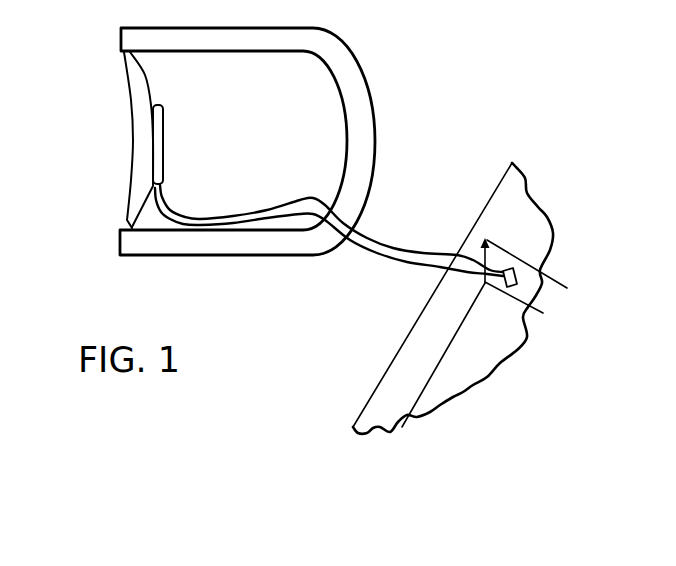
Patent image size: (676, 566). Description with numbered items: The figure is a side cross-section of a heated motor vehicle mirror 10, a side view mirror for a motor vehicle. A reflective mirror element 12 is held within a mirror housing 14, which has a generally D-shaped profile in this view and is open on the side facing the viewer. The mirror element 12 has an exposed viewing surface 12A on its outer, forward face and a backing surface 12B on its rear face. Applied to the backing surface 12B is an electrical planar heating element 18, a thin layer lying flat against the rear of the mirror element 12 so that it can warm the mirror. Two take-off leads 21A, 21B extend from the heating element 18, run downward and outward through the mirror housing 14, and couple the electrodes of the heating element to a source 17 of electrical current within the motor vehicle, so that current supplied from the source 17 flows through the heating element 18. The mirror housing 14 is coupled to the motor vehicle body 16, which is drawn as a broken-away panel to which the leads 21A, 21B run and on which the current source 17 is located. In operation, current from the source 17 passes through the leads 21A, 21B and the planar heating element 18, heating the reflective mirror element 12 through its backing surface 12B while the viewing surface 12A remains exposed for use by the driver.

The heated motor vehicle mirror 10 is at (108, 41).
The reflective mirror element 12 is at (143, 157).
The exposed viewing surface 12A is at (128, 89).
The backing surface 12B is at (152, 82).
The mirror housing 14 is at (253, 134).
The motor vehicle body 16 is at (484, 205).
The source of electrical current 17 is at (517, 282).
The electrical planar heating element 18 is at (172, 140).
The take-off lead 21A is at (182, 218).
The take-off lead 21B is at (210, 213).